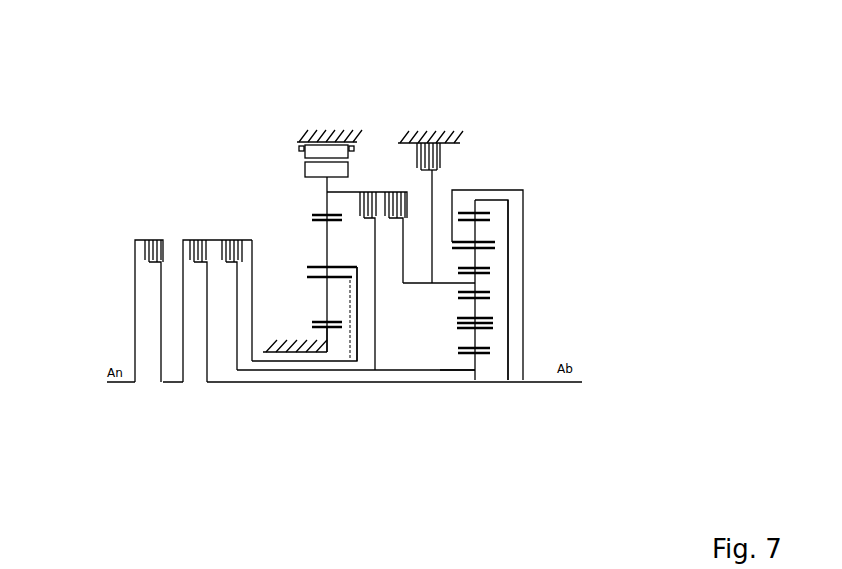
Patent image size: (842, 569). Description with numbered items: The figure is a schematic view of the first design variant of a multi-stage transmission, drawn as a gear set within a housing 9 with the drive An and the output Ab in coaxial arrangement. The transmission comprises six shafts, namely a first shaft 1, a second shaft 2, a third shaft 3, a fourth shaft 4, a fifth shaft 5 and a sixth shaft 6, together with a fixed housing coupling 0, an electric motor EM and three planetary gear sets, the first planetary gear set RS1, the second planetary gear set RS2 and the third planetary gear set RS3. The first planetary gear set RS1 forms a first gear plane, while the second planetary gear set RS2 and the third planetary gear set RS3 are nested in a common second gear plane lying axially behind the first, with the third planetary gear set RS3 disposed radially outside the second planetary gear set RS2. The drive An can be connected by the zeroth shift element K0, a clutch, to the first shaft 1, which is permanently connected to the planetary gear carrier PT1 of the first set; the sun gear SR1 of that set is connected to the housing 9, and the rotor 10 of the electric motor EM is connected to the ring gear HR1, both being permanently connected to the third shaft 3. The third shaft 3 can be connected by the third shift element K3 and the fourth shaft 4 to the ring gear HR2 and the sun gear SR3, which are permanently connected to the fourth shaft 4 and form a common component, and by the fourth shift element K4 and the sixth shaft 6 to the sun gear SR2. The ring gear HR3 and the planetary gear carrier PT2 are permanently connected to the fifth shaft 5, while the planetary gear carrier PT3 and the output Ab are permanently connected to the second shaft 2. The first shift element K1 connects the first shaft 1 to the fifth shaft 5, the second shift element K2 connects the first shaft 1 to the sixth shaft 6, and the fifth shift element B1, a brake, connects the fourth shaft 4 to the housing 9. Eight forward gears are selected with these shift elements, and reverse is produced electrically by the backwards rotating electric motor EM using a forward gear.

The zeroth shift element K0 is at (144, 229).
The first shift element K1 is at (192, 228).
The second shift element K2 is at (223, 229).
The third shift element K3 is at (396, 174).
The fourth shift element K4 is at (367, 174).
The fifth shift element B1 is at (460, 143).
The electric motor EM is at (302, 148).
The ring gear of the first planetary gear set HR1 is at (312, 214).
The ring gear of the second planetary gear set HR2 is at (492, 290).
The ring gear of the third planetary gear set HR3 is at (483, 208).
The sun gear of the first planetary gear set SR1 is at (337, 330).
The sun gear of the second planetary gear set SR2 is at (492, 355).
The sun gear of the third planetary gear set SR3 is at (492, 280).
The planetary gear carrier of the first planetary gear set PT1 is at (307, 253).
The planetary gear carrier of the second planetary gear set PT2 is at (490, 338).
The planetary gear carrier of the third planetary gear set PT3 is at (491, 229).
The first planetary gear set RS1 is at (327, 398).
The second planetary gear set RS2 is at (487, 406).
The third planetary gear set RS3 is at (475, 398).
The fixed housing coupling 0 is at (322, 348).
The first shaft 1 is at (357, 362).
The second shaft 2 is at (474, 192).
The third shaft 3 is at (325, 193).
The fourth shaft 4 is at (436, 281).
The fifth shaft 5 is at (496, 210).
The sixth shaft 6 is at (456, 383).
The housing 9 is at (302, 140).
The rotor 10 is at (297, 147).